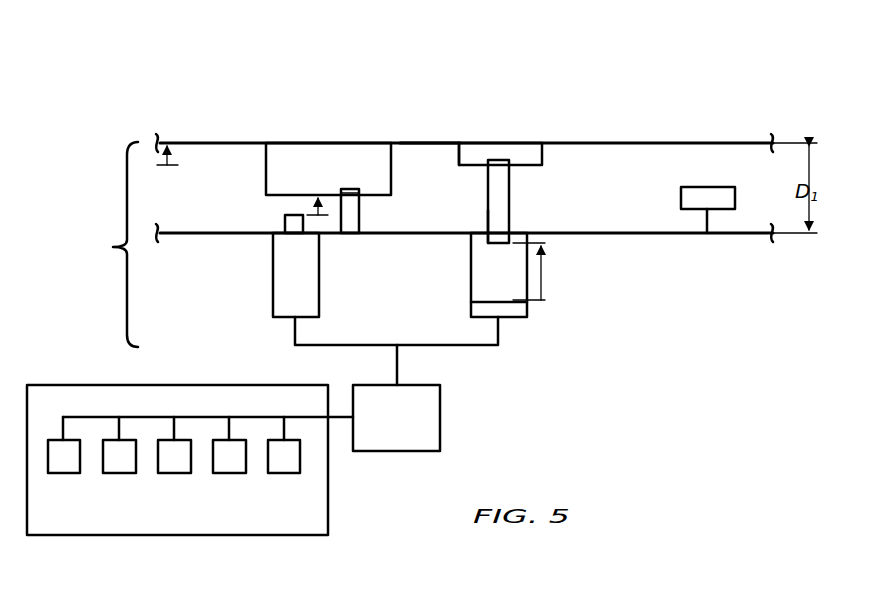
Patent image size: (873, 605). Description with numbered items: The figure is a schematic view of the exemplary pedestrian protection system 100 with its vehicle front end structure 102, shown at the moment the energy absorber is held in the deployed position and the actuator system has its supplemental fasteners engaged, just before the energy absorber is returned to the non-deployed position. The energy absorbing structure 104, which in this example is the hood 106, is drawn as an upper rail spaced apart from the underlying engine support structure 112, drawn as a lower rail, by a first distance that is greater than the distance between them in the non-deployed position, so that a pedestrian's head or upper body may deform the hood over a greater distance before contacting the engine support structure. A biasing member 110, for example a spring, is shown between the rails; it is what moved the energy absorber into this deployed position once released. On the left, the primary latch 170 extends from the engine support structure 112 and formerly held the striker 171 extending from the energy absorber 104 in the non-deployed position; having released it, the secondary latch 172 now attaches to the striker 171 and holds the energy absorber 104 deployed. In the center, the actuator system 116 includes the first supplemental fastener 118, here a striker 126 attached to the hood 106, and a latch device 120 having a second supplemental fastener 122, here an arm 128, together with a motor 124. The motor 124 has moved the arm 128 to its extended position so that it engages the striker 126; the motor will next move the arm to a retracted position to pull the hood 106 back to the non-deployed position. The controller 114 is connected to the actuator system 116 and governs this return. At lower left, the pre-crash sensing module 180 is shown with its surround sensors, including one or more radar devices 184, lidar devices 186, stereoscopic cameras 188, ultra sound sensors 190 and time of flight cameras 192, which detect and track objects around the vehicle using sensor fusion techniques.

The pedestrian protection system 100 is at (137, 88).
The vehicle front end structure 102 is at (105, 244).
The energy absorbing structure 104 is at (733, 138).
The hood 106 is at (428, 142).
The biasing member 110 is at (724, 210).
The engine support structure 112 is at (682, 235).
The controller 114 is at (440, 420).
The actuator system 116 is at (548, 328).
The first supplemental fastener 118 is at (458, 153).
The latch device 120 is at (460, 309).
The second supplemental fastener 122 is at (488, 228).
The motor 124 is at (517, 318).
The striker 126 is at (532, 165).
The arm 128 is at (510, 220).
The primary latch 170 is at (285, 226).
The striker 171 is at (266, 165).
The secondary latch 172 is at (360, 214).
The pre-crash sensing module 180 is at (53, 385).
The radar device 184 is at (63, 473).
The lidar device 186 is at (118, 473).
The stereoscopic camera 188 is at (173, 473).
The ultra sound sensor 190 is at (228, 473).
The time of flight camera 192 is at (283, 473).